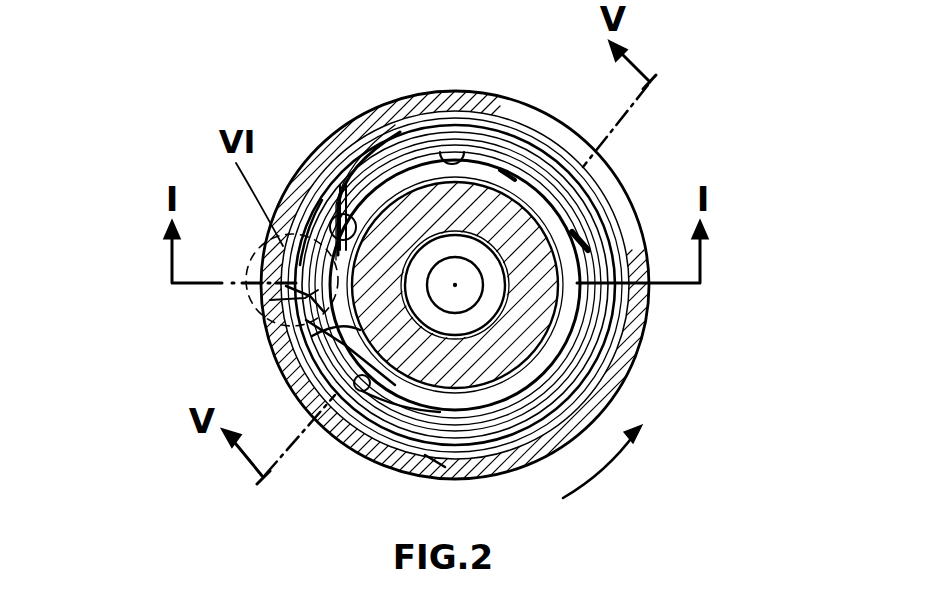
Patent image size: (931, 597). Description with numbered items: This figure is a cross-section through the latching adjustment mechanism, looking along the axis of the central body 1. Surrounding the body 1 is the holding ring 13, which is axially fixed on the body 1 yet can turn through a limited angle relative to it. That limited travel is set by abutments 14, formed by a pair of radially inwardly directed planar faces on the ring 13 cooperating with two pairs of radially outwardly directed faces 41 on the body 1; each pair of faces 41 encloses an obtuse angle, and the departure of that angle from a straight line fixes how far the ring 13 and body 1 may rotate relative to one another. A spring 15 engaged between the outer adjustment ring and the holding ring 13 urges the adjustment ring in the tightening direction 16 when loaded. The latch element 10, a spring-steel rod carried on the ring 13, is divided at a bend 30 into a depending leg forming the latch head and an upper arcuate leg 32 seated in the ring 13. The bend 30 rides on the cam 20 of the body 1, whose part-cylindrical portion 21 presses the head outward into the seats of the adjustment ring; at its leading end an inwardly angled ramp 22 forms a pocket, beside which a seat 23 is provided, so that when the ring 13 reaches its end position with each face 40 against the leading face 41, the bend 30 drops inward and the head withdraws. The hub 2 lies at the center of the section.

The body 1 is at (553, 353).
The hub / shaft 2 is at (477, 236).
The latch element 10 is at (290, 278).
The holding ring 13 is at (567, 134).
The abutments 14 is at (483, 160).
The spring 15 is at (588, 333).
The tightening direction 16 is at (614, 458).
The cam 20 is at (343, 210).
The part-cylindrical portion 21 is at (405, 185).
The ramp 22 is at (330, 328).
The seat 23 is at (300, 300).
The bend 30 is at (297, 292).
The upper arcuate leg 32 is at (322, 200).
The faces 40 is at (505, 170).
The radially outwardly directed faces 41 is at (412, 100).